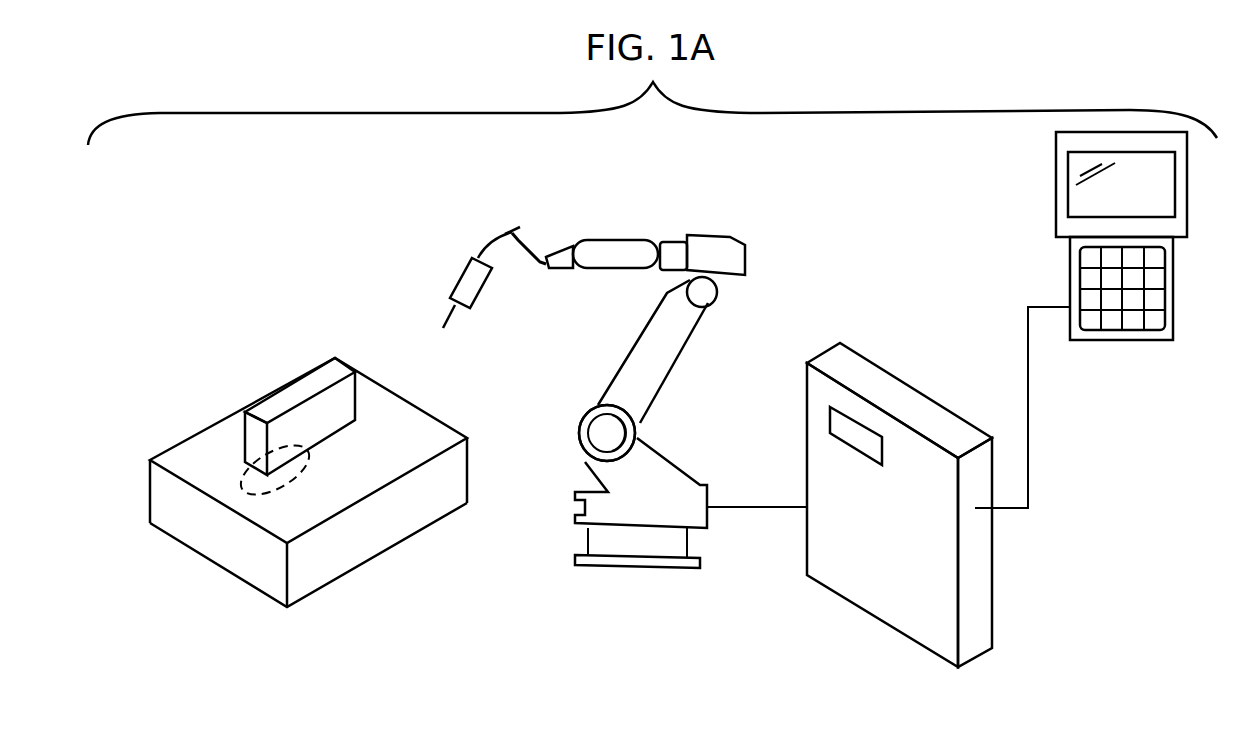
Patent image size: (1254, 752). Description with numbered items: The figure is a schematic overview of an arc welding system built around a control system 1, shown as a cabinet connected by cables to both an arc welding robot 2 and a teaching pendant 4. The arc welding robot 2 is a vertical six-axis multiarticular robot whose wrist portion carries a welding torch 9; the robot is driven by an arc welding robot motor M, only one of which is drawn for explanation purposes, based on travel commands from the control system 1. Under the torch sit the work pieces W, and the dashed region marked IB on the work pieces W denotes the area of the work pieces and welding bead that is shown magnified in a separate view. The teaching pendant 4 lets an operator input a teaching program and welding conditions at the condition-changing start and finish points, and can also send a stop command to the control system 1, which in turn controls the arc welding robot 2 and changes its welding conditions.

The control system 1 is at (882, 622).
The arc welding robot 2 is at (618, 240).
The teaching pendant 4 is at (1056, 178).
The welding torch 9 is at (485, 288).
The mark IB is at (247, 475).
The arc welding robot motor M is at (598, 433).
The work pieces W is at (340, 575).